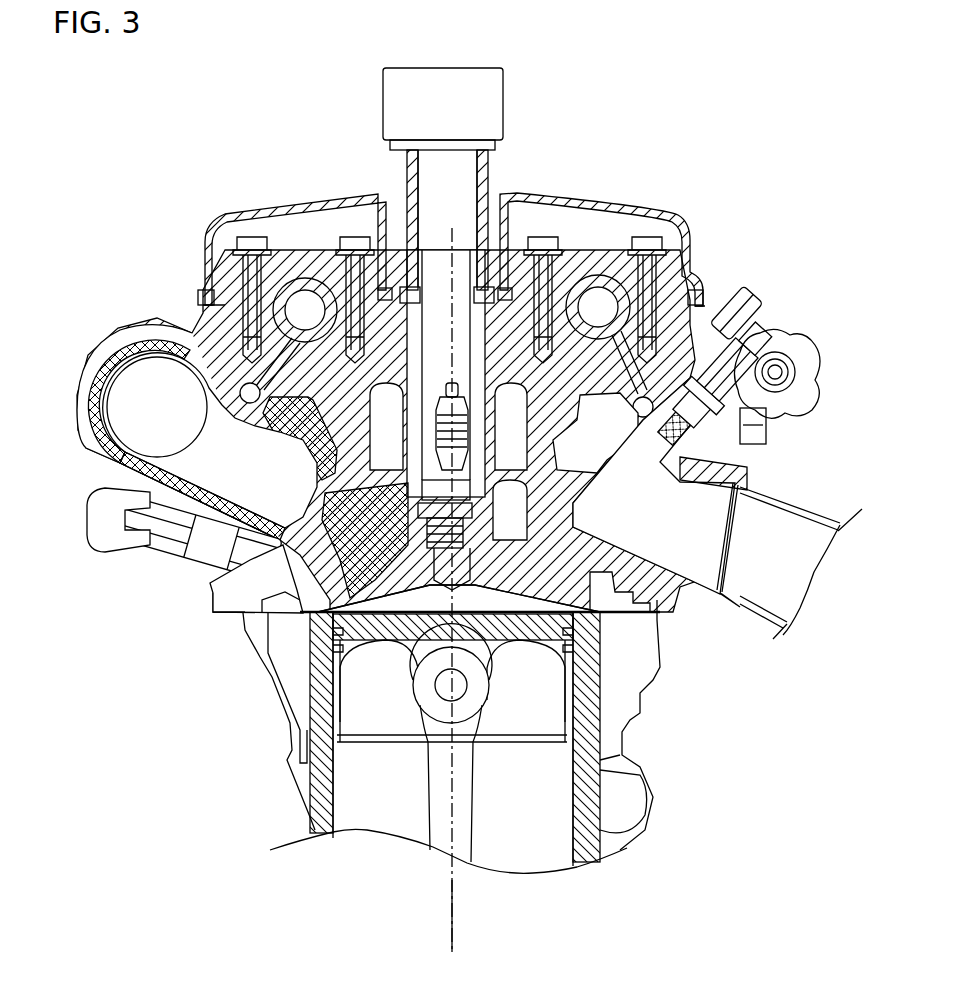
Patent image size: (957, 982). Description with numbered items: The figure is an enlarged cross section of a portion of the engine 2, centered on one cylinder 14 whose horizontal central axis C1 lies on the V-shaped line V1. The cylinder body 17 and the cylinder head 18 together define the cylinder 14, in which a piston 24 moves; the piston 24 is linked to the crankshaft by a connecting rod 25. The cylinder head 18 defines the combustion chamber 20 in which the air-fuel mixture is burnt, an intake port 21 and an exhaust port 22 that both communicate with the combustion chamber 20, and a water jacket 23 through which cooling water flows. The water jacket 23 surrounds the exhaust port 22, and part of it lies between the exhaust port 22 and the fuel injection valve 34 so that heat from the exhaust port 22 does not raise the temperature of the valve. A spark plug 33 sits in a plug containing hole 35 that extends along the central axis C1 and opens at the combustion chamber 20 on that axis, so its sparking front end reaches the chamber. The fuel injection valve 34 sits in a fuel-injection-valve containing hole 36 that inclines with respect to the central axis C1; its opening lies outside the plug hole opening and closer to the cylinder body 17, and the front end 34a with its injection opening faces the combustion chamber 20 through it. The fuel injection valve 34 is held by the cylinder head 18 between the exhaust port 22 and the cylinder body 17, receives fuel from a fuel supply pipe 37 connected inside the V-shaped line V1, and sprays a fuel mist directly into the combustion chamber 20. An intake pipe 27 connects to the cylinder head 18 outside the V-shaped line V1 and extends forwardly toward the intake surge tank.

The engine 2 is at (188, 108).
The cylinder 14 is at (304, 830).
The cylinder body 17 is at (645, 690).
The cylinder head 18 is at (668, 597).
The combustion chamber 20 is at (330, 672).
The intake port 21 is at (752, 541).
The exhaust port 22 is at (132, 390).
The water jacket 23 is at (80, 456).
The piston 24 is at (528, 700).
The connecting rod 25 is at (462, 815).
The intake pipe 27 is at (820, 512).
The spark plug 33 is at (441, 653).
The fuel injection valve 34 is at (200, 590).
The front end of the fuel injection valve 34a is at (330, 626).
The plug containing hole 35 is at (383, 640).
The fuel-injection-valve containing hole 36 is at (272, 622).
The fuel supply pipe 37 is at (97, 532).
The central axis C1 is at (450, 925).
The V-shaped line V1 is at (453, 900).